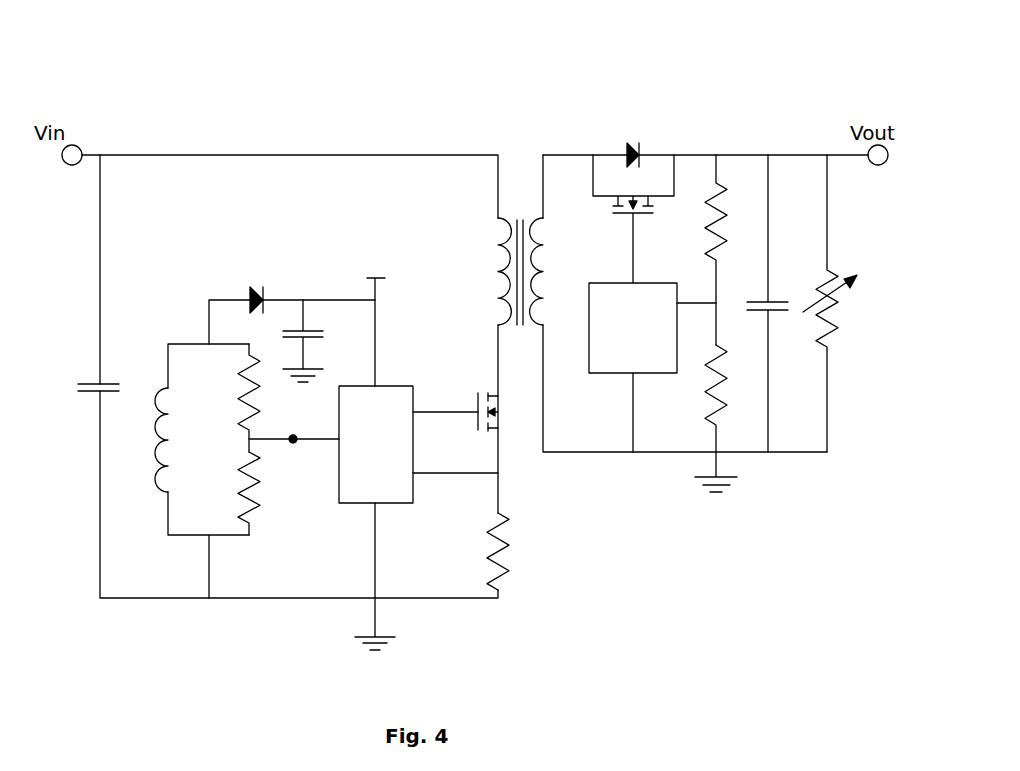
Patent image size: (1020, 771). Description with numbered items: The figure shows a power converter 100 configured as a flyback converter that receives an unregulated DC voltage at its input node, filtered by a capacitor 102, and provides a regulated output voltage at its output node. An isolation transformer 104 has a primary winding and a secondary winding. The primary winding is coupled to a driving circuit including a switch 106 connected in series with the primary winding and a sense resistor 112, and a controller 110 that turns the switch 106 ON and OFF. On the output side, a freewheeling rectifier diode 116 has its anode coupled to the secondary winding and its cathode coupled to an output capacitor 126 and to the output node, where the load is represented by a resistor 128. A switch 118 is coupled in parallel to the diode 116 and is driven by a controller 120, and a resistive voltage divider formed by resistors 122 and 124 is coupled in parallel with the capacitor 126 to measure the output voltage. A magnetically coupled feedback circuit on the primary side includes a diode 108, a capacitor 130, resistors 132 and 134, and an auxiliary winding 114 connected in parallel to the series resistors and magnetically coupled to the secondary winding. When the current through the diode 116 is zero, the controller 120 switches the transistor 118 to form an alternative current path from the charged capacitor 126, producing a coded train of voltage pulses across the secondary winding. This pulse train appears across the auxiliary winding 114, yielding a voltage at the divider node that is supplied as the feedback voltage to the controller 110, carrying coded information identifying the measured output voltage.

The power converter 100 is at (690, 60).
The capacitor 102 is at (80, 383).
The isolation transformer 104 is at (515, 183).
The switch 106 is at (472, 392).
The diode 108 is at (258, 284).
The controller 110 is at (397, 386).
The sense resistor 112 is at (481, 554).
The auxiliary winding 114 is at (155, 460).
The freewheeling rectifier diode 116 is at (640, 147).
The switch 118 is at (614, 208).
The controller 120 is at (590, 363).
The resistor 122 is at (730, 237).
The resistor 124 is at (732, 395).
The output capacitor 126 is at (780, 300).
The resistor 128 is at (836, 302).
The capacitor 130 is at (320, 331).
The resistor 132 is at (272, 393).
The resistor 134 is at (258, 487).